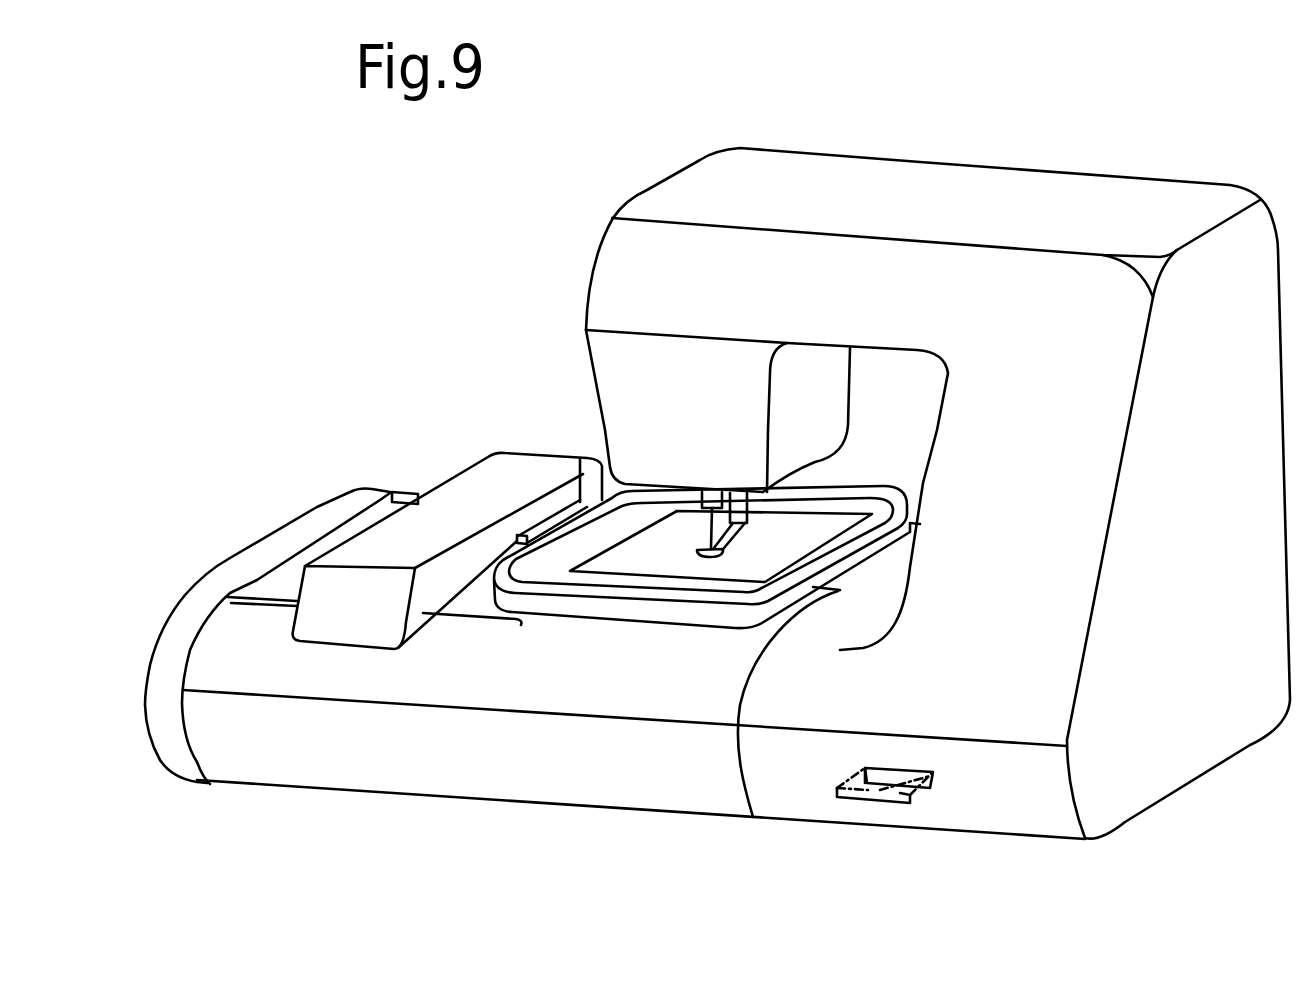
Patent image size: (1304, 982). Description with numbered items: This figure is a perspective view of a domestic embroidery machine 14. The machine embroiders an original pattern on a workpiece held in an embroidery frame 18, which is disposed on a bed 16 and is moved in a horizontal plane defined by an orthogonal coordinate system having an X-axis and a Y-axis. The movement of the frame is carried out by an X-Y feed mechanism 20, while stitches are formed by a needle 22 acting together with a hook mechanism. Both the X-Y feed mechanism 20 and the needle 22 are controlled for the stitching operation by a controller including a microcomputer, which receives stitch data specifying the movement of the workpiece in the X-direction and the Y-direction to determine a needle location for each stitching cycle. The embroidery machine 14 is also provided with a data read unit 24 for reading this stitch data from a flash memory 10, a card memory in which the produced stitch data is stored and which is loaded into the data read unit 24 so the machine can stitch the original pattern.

The domestic embroidery machine 14 is at (398, 295).
The bed 16 is at (337, 517).
The X-Y feed mechanism 20 is at (437, 470).
The embroidery frame 18 is at (600, 605).
The needle 22 is at (703, 522).
The flash memory 10 is at (863, 793).
The data read unit 24 is at (933, 773).